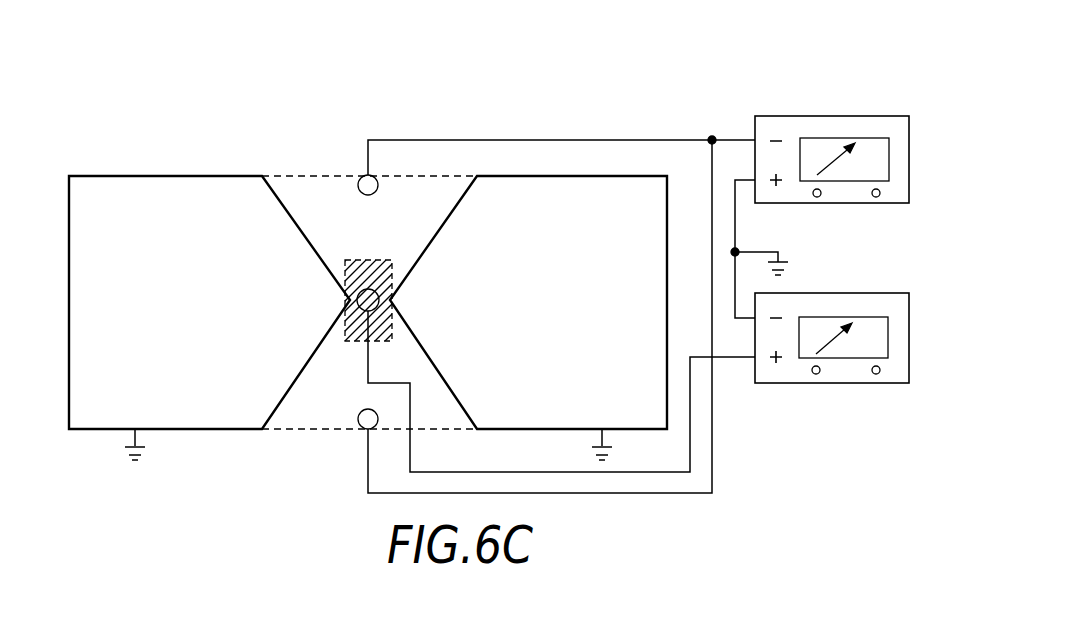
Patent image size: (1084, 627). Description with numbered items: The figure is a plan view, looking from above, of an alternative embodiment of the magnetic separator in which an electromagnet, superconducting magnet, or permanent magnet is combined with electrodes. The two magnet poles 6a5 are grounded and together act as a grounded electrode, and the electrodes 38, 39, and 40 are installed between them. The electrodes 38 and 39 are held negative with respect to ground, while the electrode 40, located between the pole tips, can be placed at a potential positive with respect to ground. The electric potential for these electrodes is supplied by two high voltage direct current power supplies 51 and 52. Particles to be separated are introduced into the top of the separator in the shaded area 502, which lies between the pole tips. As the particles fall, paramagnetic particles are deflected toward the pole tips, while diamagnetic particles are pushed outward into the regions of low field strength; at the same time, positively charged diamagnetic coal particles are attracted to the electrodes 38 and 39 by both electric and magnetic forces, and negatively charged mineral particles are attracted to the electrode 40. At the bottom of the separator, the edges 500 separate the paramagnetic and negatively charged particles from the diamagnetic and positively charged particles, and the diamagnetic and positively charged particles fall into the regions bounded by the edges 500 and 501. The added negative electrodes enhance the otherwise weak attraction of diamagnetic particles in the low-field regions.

The magnet poles 6a5 is at (201, 197).
The edges 501 is at (288, 161).
The electrode 38 is at (359, 162).
The electrode 39 is at (357, 441).
The electrode 40 is at (356, 278).
The edges 500 is at (390, 246).
The shaded area 502 is at (333, 326).
The high voltage direct current power supply 51 is at (799, 111).
The high voltage direct current power supply 52 is at (852, 376).